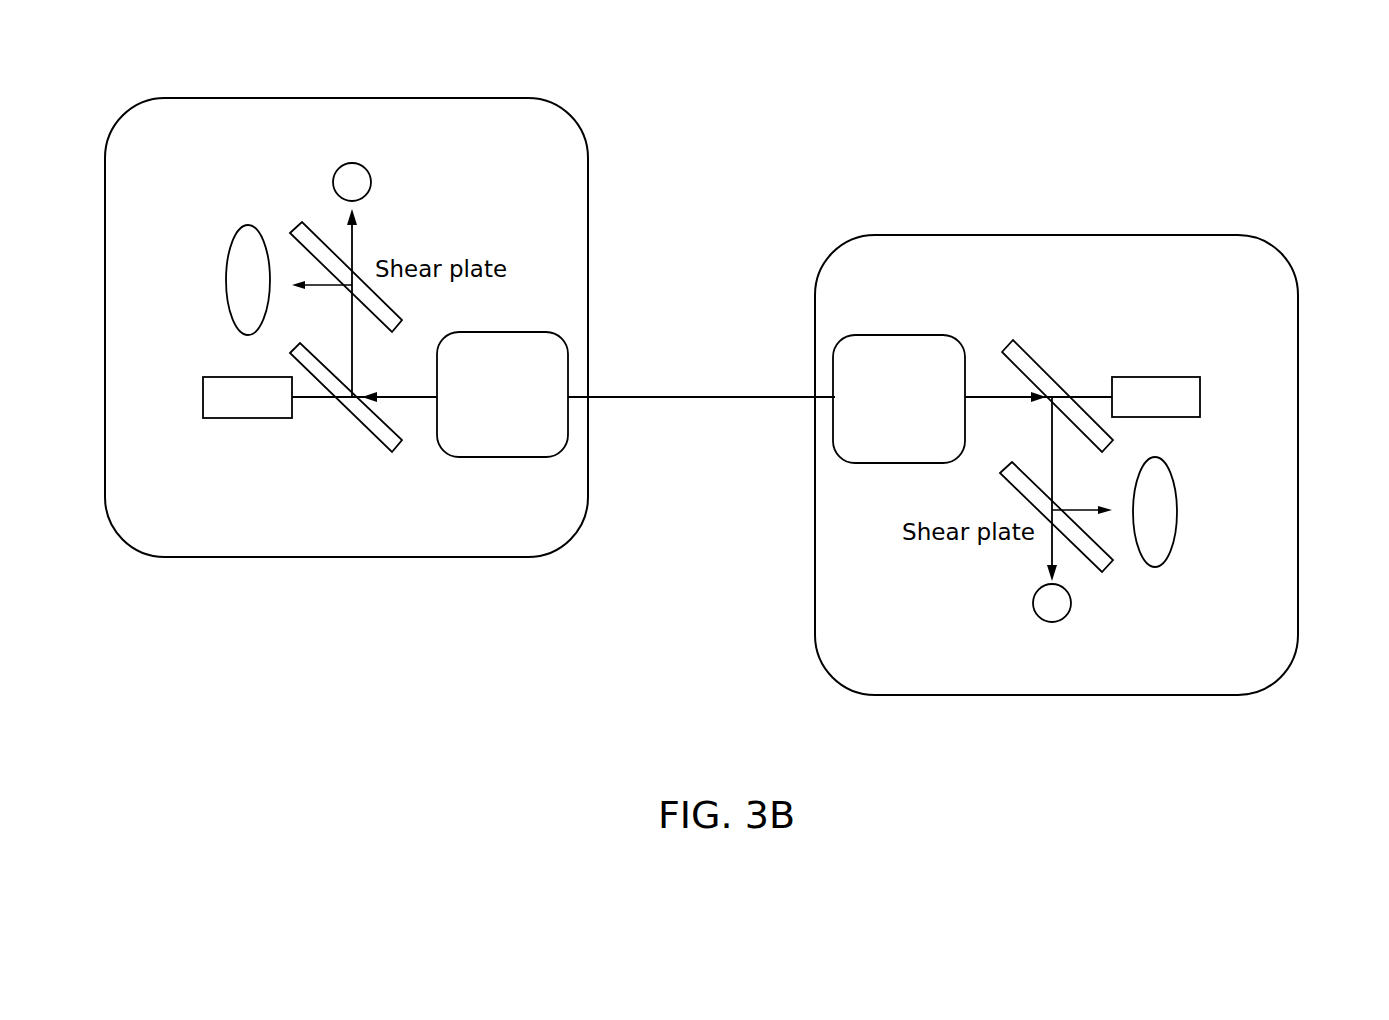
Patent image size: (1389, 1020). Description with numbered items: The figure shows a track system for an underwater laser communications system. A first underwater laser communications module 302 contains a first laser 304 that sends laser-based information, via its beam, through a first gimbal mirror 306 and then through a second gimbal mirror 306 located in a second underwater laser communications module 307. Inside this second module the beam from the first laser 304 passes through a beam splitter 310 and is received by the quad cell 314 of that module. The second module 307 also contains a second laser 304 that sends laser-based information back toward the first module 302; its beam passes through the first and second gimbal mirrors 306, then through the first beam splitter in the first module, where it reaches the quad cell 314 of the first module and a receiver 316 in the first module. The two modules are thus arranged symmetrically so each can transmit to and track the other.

The first underwater laser communications module 302 is at (490, 557).
The laser 304 is at (203, 397).
The gimbal mirror 306 is at (862, 362).
The second underwater laser communications module 307 is at (1017, 235).
The beam splitter 310 is at (372, 432).
The quad cell 314 is at (247, 240).
The receiver 316 is at (352, 175).